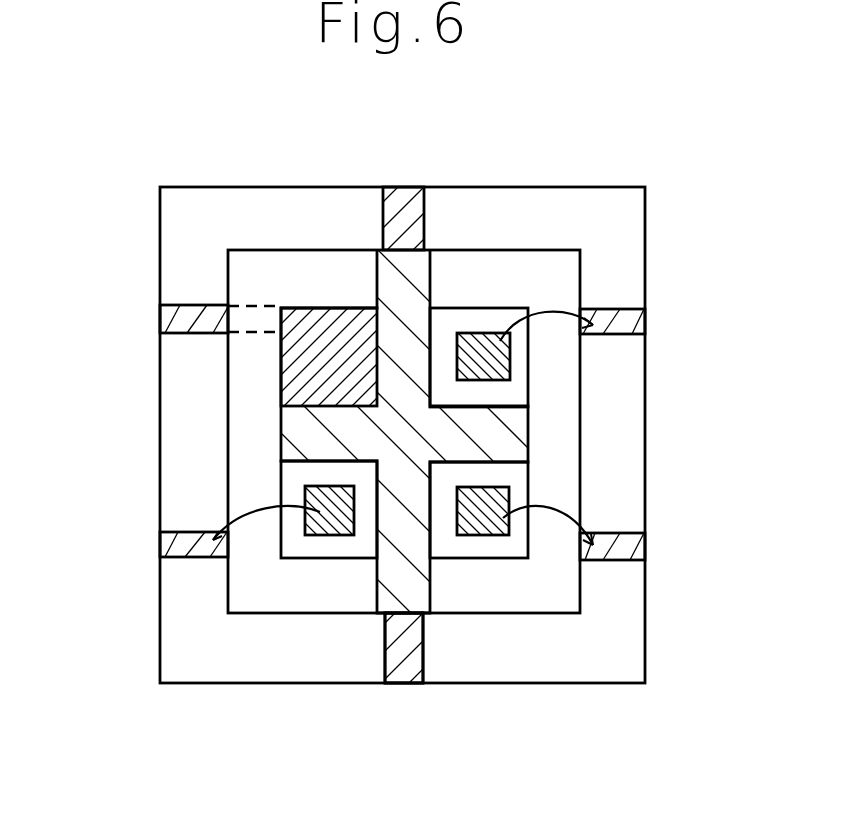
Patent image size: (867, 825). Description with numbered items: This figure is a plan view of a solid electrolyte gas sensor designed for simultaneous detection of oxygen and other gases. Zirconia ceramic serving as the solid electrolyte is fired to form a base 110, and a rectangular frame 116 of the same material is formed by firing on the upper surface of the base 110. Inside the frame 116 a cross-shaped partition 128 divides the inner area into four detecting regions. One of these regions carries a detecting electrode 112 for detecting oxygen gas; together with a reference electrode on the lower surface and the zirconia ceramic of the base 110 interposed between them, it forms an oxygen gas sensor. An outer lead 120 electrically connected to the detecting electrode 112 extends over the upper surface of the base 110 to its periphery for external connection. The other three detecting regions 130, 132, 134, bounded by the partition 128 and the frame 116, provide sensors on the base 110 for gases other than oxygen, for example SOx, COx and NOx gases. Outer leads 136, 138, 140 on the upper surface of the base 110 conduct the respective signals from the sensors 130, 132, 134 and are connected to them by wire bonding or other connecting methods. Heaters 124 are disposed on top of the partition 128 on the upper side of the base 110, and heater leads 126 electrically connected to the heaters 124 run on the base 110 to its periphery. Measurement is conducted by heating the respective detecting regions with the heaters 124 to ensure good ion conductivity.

The base 110 is at (642, 232).
The detecting electrode 112 is at (332, 307).
The frame 116 is at (573, 438).
The outer lead 120 is at (173, 315).
The heater 124 is at (392, 575).
The heater lead 126 is at (412, 667).
The cross-shaped partition 128 is at (390, 428).
The detecting region 130 is at (488, 345).
The detecting region 132 is at (485, 523).
The detecting region 134 is at (338, 525).
The outer lead 136 is at (637, 318).
The outer lead 138 is at (637, 547).
The outer lead 140 is at (175, 543).